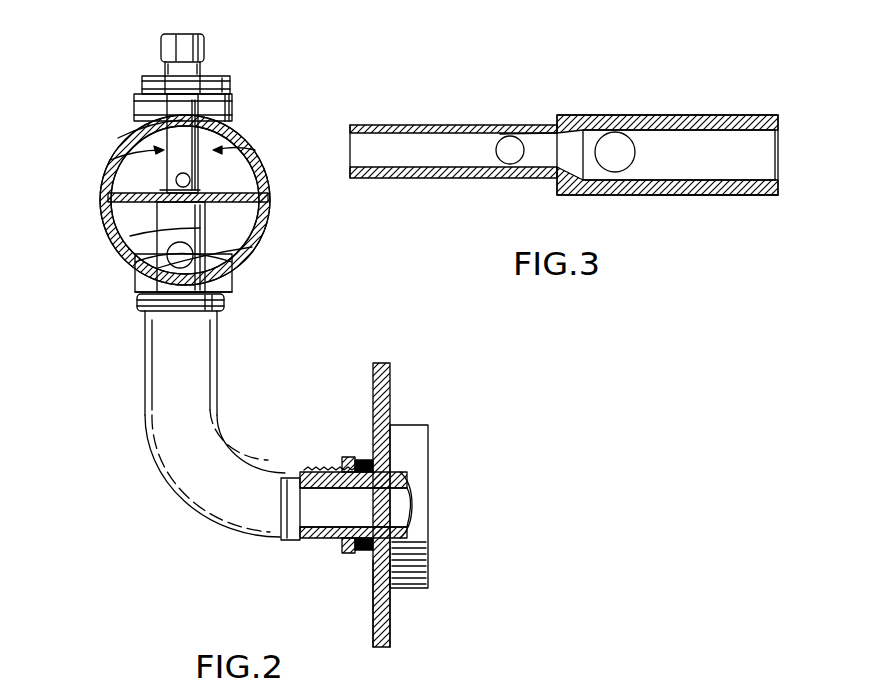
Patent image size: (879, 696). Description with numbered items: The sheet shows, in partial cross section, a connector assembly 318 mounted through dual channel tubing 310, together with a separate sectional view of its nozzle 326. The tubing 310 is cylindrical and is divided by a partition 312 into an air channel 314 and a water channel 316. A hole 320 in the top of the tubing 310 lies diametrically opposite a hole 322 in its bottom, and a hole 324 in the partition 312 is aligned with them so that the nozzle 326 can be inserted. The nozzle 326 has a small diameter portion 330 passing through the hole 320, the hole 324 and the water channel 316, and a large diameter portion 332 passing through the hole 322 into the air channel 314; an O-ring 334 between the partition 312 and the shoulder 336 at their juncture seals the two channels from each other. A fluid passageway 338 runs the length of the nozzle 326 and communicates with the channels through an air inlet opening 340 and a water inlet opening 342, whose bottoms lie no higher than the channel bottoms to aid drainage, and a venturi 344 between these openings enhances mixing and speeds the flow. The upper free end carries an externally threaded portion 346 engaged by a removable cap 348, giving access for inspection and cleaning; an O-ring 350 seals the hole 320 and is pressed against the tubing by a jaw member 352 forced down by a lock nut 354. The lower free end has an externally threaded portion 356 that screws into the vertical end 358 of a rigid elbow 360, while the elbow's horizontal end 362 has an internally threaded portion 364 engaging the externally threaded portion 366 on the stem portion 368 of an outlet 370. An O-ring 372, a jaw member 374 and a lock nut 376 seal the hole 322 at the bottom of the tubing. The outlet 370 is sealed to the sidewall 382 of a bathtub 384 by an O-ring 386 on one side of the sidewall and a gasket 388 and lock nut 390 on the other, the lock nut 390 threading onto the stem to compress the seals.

In FIG. 2, the dual channel tubing 310 is at (98, 204).
In FIG. 2, the partition 312 is at (250, 209).
In FIG. 2, the air channel 314 is at (130, 236).
In FIG. 2, the water channel 316 is at (120, 162).
In FIG. 2, the connector assembly 318 is at (234, 100).
In FIG. 2, the hole 320 is at (238, 130).
In FIG. 2, the hole 322 is at (242, 252).
In FIG. 2, the hole 324 is at (174, 192).
In FIG. 2, the nozzle 326 is at (246, 148).
In FIG. 3, the nozzle 326 is at (562, 114).
In FIG. 2, the small diameter portion 330 is at (128, 140).
In FIG. 2, the large diameter portion 332 is at (142, 262).
In FIG. 2, the O-ring 334 is at (162, 206).
In FIG. 2, the shoulder 336 is at (204, 216).
In FIG. 3, the fluid passageway 338 is at (676, 172).
In FIG. 2, the air inlet opening 340 is at (166, 268).
In FIG. 3, the air inlet opening 340 is at (612, 136).
In FIG. 2, the water inlet opening 342 is at (190, 180).
In FIG. 3, the water inlet opening 342 is at (514, 140).
In FIG. 3, the venturi 344 is at (572, 160).
In FIG. 2, the externally threaded portion 346 is at (204, 76).
In FIG. 3, the externally threaded portion 346 is at (428, 126).
In FIG. 2, the cap 348 is at (163, 46).
In FIG. 2, the O-ring 350 is at (138, 110).
In FIG. 2, the jaw member 352 is at (236, 116).
In FIG. 2, the lock nut 354 is at (212, 88).
In FIG. 3, the externally threaded portion 356 is at (738, 118).
In FIG. 2, the vertical end 358 is at (222, 330).
In FIG. 2, the elbow 360 is at (166, 480).
In FIG. 2, the horizontal end 362 is at (272, 532).
In FIG. 2, the internally threaded portion 364 is at (304, 470).
In FIG. 2, the externally threaded portion 366 is at (325, 540).
In FIG. 2, the stem portion 368 is at (410, 486).
In FIG. 2, the outlet 370 is at (428, 432).
In FIG. 2, the O-ring 372 is at (240, 272).
In FIG. 2, the jaw member 374 is at (146, 288).
In FIG. 2, the lock nut 376 is at (236, 306).
In FIG. 2, the sidewall 382 is at (392, 382).
In FIG. 2, the bathtub 384 is at (391, 619).
In FIG. 2, the O-ring 386 is at (412, 504).
In FIG. 2, the gasket 388 is at (366, 552).
In FIG. 2, the lock nut 390 is at (347, 456).